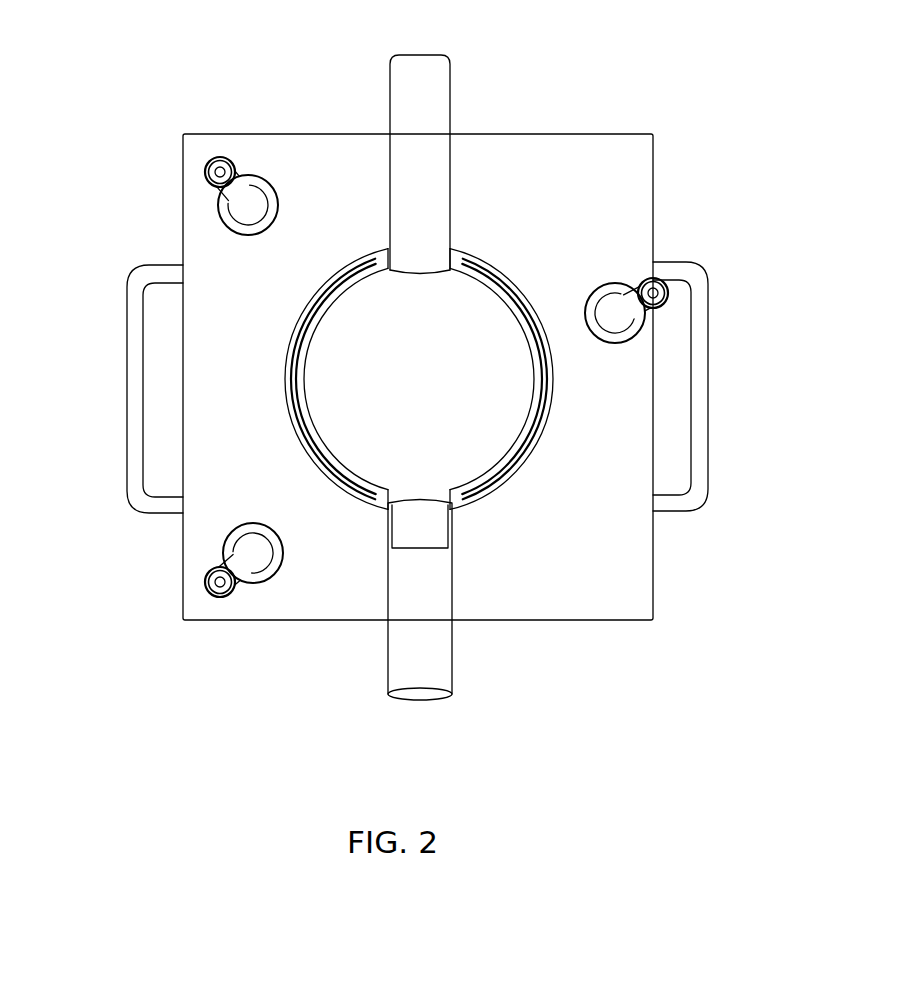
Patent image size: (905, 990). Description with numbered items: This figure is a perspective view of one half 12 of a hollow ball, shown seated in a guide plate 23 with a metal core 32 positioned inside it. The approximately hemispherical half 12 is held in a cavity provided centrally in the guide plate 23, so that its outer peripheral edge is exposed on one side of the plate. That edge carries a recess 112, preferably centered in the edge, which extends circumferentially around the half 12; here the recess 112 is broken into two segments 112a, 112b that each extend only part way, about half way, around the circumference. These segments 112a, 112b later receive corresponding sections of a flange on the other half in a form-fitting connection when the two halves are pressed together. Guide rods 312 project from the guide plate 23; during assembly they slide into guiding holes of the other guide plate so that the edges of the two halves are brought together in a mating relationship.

The half of the ball 12 is at (386, 506).
The guide plate 23 is at (240, 417).
The metal core 32 is at (418, 380).
The recess 112 is at (433, 439).
The recess segment 112a is at (527, 294).
The recess segment 112b is at (310, 295).
The guide rod 312 is at (233, 227).